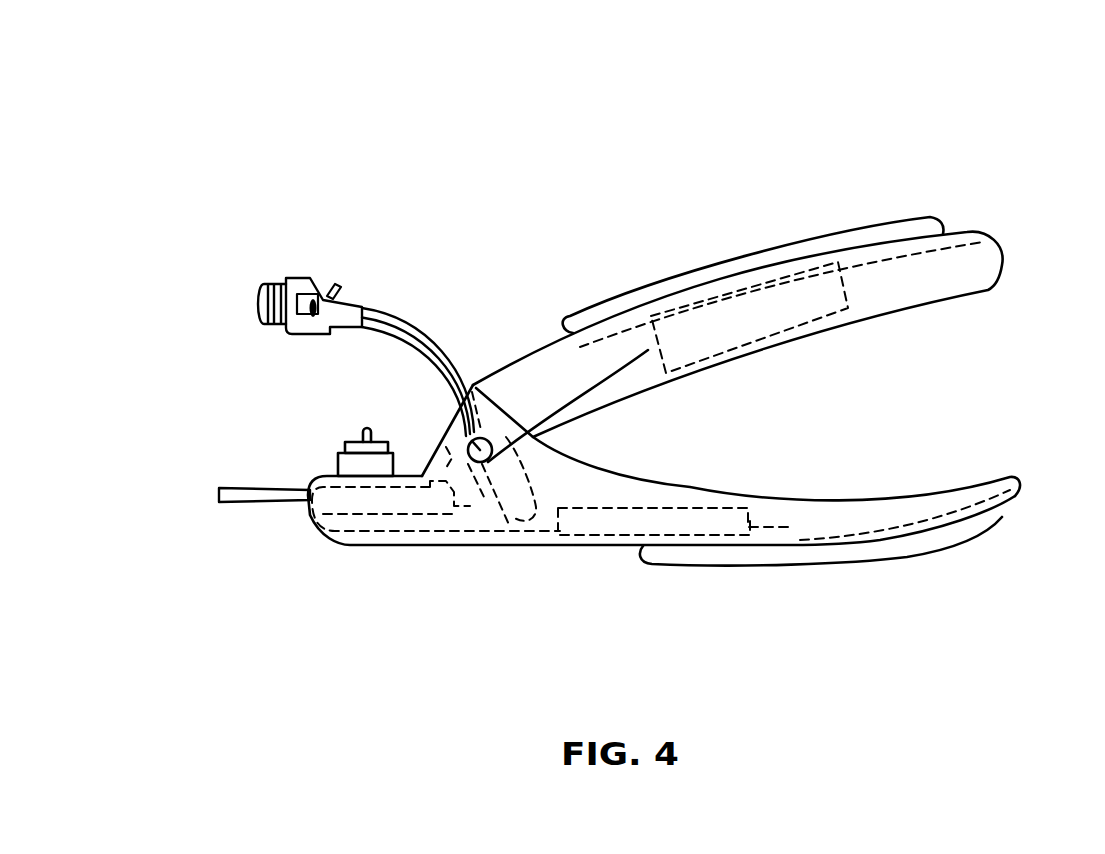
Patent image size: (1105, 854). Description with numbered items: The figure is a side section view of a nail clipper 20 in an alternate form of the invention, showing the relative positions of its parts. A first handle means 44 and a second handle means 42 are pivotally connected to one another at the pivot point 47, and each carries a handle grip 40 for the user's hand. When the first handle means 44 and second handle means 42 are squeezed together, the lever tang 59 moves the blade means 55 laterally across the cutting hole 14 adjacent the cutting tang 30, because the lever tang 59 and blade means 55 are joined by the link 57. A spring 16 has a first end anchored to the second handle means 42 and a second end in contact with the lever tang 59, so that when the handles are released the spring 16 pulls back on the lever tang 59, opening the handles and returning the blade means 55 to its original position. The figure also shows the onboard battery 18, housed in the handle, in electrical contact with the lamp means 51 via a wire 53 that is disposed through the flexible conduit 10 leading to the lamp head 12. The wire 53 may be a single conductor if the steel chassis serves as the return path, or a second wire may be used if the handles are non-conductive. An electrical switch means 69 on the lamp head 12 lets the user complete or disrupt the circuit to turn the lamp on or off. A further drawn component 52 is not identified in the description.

The flexible conduit 10 is at (418, 332).
The lamp head 12 is at (306, 246).
The cutting hole 14 is at (270, 429).
The spring 16 is at (661, 574).
The battery 18 is at (749, 275).
The nail clipper 20 is at (673, 377).
The cutting tang 30 is at (225, 498).
The handle grips 40 is at (782, 410).
The second handle means 42 is at (776, 480).
The first handle means 44 is at (712, 354).
The pivot point 47 is at (418, 413).
The lamp means 51 is at (317, 234).
The end cap 52 is at (270, 333).
The wire 53 is at (576, 364).
The blade means 55 is at (415, 547).
The link 57 is at (478, 532).
The lever tang 59 is at (524, 522).
The electrical switch means 69 is at (357, 253).